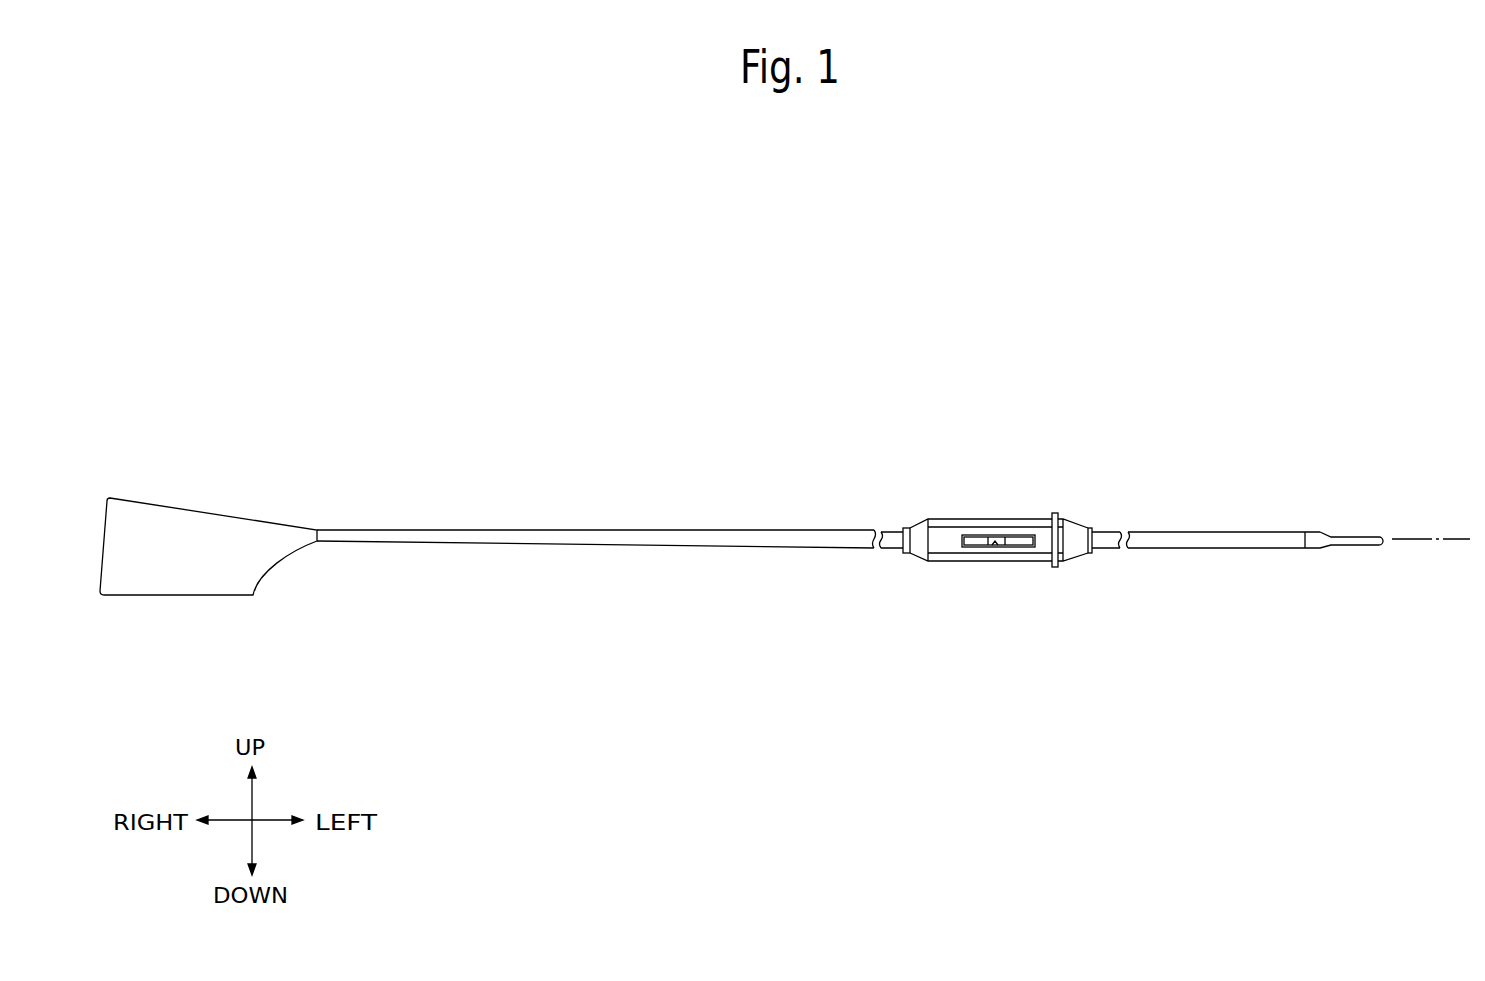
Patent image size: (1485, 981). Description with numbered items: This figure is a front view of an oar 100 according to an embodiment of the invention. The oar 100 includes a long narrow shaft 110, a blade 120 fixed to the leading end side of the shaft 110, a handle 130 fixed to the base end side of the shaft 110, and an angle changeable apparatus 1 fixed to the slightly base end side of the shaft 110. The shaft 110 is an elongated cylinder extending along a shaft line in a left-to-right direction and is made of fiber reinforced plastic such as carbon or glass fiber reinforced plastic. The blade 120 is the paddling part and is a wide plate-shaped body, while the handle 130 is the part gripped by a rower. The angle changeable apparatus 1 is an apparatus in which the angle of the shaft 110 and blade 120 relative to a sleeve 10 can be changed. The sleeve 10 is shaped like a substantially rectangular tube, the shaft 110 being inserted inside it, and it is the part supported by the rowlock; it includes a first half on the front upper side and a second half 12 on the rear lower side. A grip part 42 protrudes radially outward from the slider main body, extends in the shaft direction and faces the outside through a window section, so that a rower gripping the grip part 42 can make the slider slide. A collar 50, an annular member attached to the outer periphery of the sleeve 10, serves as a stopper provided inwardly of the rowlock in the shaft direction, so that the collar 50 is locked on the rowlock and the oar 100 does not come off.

The oar 100 is at (669, 196).
The blade 120 is at (208, 503).
The shaft 110 is at (736, 521).
The handle 130 is at (1350, 523).
The angle changeable apparatus 1 is at (1005, 363).
The sleeve 10 is at (950, 510).
The second half 12 is at (907, 553).
The grip part 42 is at (995, 548).
The collar 50 is at (1058, 513).